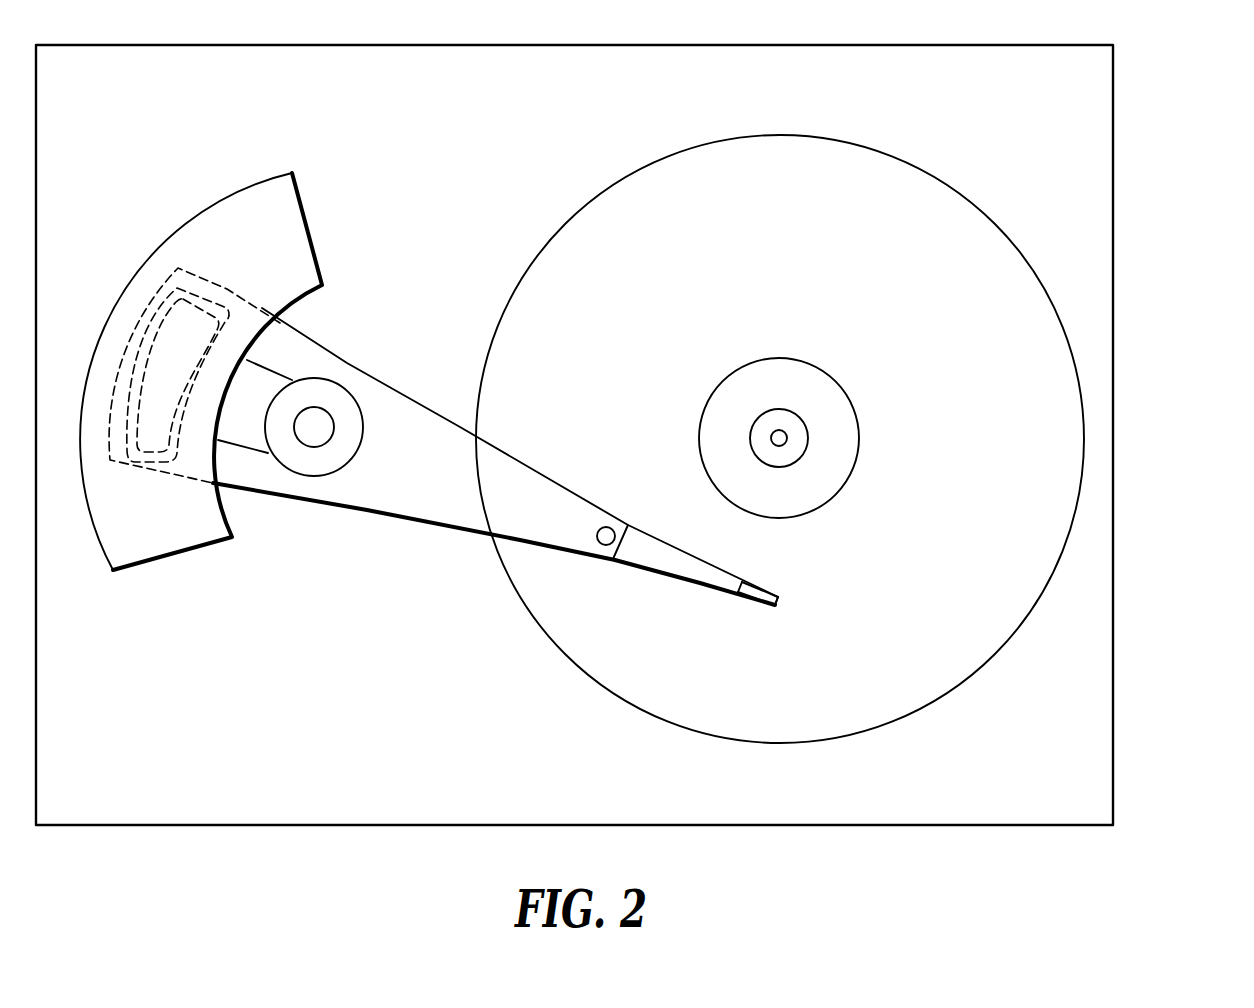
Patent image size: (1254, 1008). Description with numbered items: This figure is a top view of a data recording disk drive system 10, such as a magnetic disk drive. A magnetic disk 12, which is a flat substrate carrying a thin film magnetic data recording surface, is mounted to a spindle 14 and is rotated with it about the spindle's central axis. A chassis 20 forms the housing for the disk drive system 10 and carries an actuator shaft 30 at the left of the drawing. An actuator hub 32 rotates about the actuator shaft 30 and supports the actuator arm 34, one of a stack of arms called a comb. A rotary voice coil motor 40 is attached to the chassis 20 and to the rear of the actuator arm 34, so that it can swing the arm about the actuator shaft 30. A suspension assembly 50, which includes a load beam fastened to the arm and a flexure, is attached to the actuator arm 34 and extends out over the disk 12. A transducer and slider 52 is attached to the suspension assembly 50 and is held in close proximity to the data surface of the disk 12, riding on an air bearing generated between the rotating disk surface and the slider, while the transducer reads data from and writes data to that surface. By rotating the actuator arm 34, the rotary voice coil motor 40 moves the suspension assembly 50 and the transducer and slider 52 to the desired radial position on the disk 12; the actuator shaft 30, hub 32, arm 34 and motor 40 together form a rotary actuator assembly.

The data recording disk drive system 10 is at (1158, 232).
The magnetic disk 12 is at (848, 236).
The spindle 14 is at (802, 418).
The chassis 20 is at (477, 787).
The actuator shaft 30 is at (309, 447).
The actuator hub 32 is at (330, 390).
The actuator arm 34 is at (507, 455).
The rotary voice coil motor 40 is at (223, 215).
The suspension assembly 50 is at (687, 575).
The transducer and slider 52 is at (780, 600).